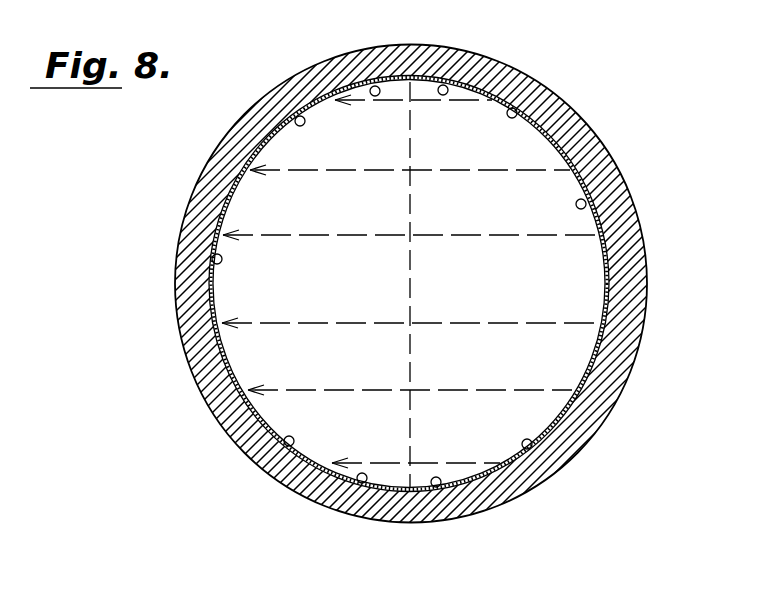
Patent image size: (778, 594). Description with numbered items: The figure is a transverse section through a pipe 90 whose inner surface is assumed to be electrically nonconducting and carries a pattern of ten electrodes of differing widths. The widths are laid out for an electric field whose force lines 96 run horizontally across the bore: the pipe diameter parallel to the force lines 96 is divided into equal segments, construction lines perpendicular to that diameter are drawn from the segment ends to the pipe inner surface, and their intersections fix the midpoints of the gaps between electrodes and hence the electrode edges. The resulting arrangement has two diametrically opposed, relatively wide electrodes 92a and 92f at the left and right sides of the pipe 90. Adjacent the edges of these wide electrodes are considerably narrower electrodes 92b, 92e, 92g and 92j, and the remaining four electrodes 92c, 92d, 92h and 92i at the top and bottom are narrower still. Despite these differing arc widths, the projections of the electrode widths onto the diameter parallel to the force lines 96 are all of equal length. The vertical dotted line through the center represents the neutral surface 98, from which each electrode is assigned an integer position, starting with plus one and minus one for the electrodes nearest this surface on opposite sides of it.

The pipe 90 is at (603, 146).
The electrode 92a is at (213, 257).
The electrode 92b is at (298, 117).
The electrode 92c is at (372, 84).
The electrode 92d is at (465, 82).
The electrode 92e is at (518, 110).
The electrode 92f is at (588, 203).
The electrode 92g is at (528, 450).
The electrode 92h is at (437, 487).
The electrode 92i is at (361, 484).
The electrode 92j is at (290, 447).
The force lines 96 is at (460, 173).
The neutral surface 98 is at (412, 155).